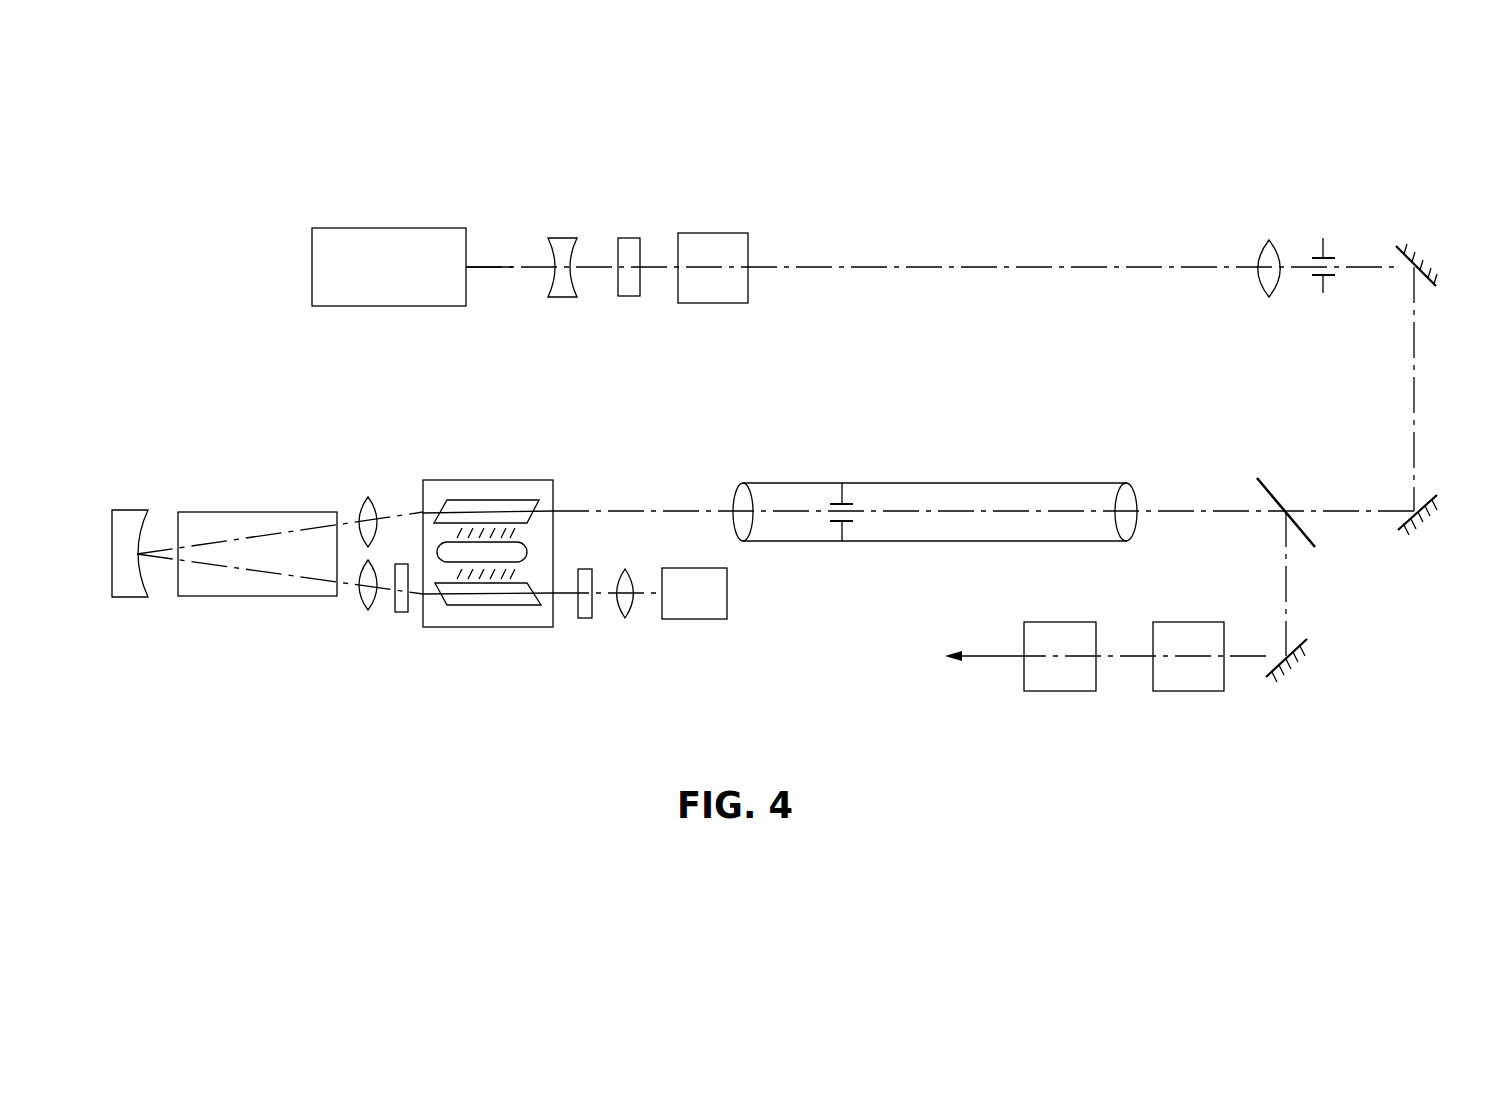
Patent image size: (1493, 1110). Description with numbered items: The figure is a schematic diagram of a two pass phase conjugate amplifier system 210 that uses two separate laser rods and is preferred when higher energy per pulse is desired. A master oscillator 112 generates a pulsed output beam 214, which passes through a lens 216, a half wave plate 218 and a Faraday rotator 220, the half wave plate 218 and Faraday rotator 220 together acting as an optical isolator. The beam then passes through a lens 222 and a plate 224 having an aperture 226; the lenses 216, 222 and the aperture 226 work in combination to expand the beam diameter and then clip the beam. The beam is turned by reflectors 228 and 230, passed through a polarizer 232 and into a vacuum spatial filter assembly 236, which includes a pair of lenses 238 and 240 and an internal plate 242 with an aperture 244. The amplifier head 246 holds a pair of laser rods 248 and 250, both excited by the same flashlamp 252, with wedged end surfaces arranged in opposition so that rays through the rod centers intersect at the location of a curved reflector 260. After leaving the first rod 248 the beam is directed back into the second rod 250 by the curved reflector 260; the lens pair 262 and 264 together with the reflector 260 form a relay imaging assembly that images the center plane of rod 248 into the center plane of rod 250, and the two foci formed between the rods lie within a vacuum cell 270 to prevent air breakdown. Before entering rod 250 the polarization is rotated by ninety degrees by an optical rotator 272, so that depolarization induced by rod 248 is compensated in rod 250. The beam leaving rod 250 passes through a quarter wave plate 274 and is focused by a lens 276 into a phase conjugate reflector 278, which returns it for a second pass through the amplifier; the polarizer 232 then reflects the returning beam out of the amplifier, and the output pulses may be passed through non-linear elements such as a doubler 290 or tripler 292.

The system 210 is at (950, 184).
The master oscillator 112 is at (368, 306).
The pulsed output beam 214 is at (497, 267).
The lens 216 is at (563, 238).
The half wave plate 218 is at (628, 242).
The Faraday rotator 220 is at (713, 238).
The lens 222 is at (1260, 260).
The plate 224 is at (1323, 248).
The aperture 226 is at (1332, 273).
The reflector 228 is at (1403, 246).
The reflector 230 is at (1412, 530).
The polarizer 232 is at (1270, 490).
The vacuum spatial filter assembly 236 is at (997, 483).
The lens 238 is at (1137, 525).
The lens 240 is at (735, 495).
The internal plate 242 is at (848, 530).
The aperture 244 is at (855, 507).
The amplifier head 246 is at (475, 480).
The laser rod 248 is at (522, 507).
The laser rod 250 is at (503, 603).
The flashlamp 252 is at (527, 552).
The curved reflector 260 is at (127, 597).
The lens 262 is at (371, 507).
The lens 264 is at (358, 598).
The vacuum cell 270 is at (235, 596).
The optical rotator 272 is at (402, 612).
The quarter wave plate 274 is at (588, 620).
The lens 276 is at (630, 608).
The phase conjugate reflector 278 is at (700, 618).
The doubler 290 is at (1187, 691).
The tripler 292 is at (1054, 691).